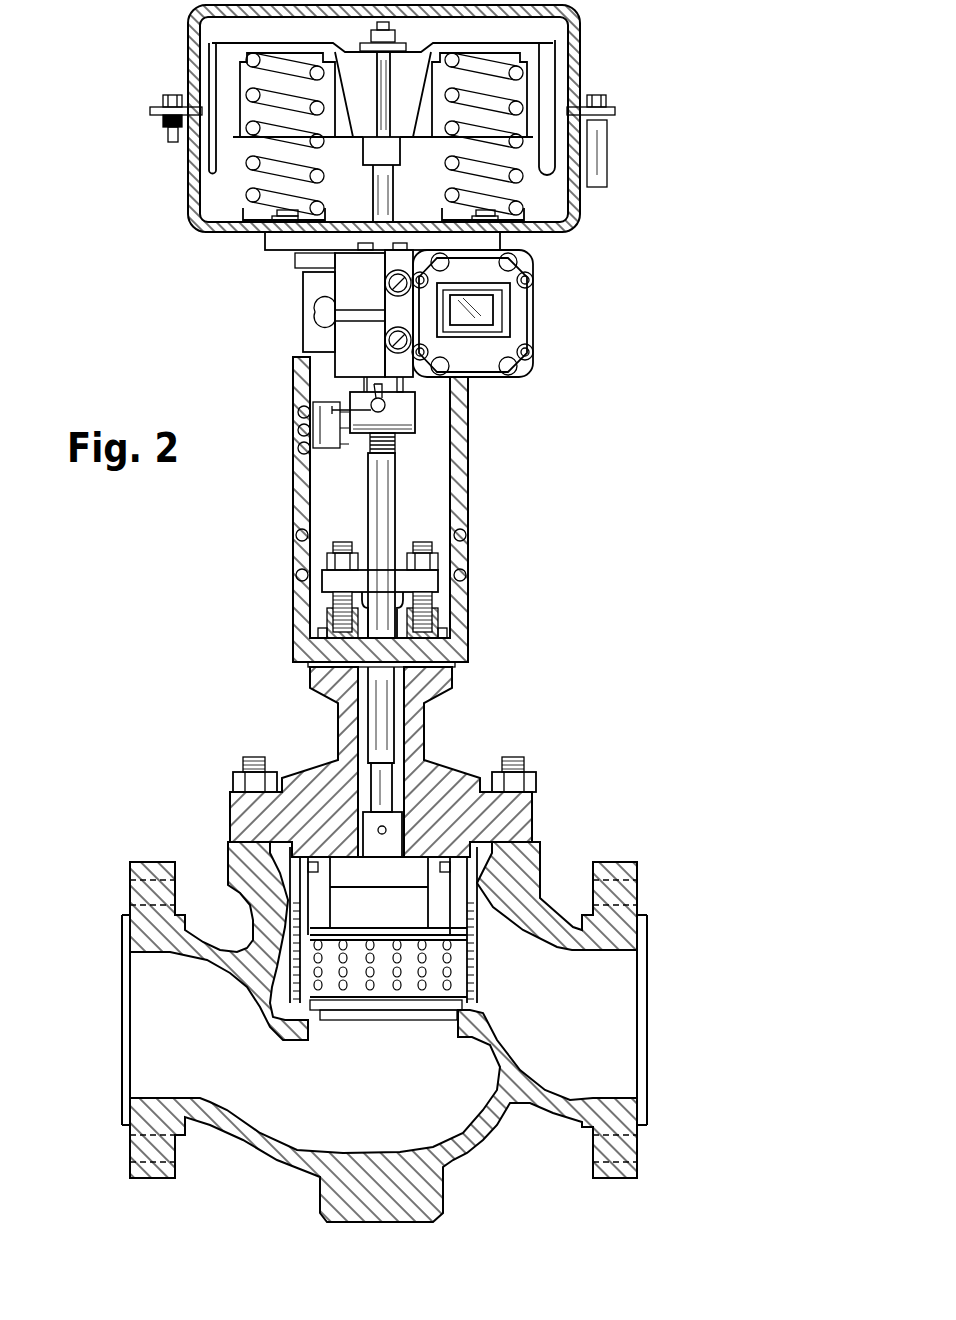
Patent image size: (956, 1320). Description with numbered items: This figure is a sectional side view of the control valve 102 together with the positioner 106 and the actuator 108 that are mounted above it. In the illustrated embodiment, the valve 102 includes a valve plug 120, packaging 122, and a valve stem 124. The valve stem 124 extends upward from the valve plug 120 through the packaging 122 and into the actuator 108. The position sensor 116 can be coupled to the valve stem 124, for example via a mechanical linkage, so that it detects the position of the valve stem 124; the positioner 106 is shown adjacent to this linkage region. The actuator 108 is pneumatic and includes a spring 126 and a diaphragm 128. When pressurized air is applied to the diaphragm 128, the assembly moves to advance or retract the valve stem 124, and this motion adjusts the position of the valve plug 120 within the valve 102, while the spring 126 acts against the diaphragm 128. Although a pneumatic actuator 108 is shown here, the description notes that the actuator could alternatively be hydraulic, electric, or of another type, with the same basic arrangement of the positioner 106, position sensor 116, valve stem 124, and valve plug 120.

The control valve 102 is at (172, 663).
The positioner 106 is at (527, 307).
The actuator 108 is at (577, 12).
The position sensor 116 is at (400, 412).
The valve plug 120 is at (413, 926).
The packaging 122 is at (420, 700).
The valve stem 124 is at (395, 480).
The spring 126 is at (485, 152).
The diaphragm 128 is at (533, 70).